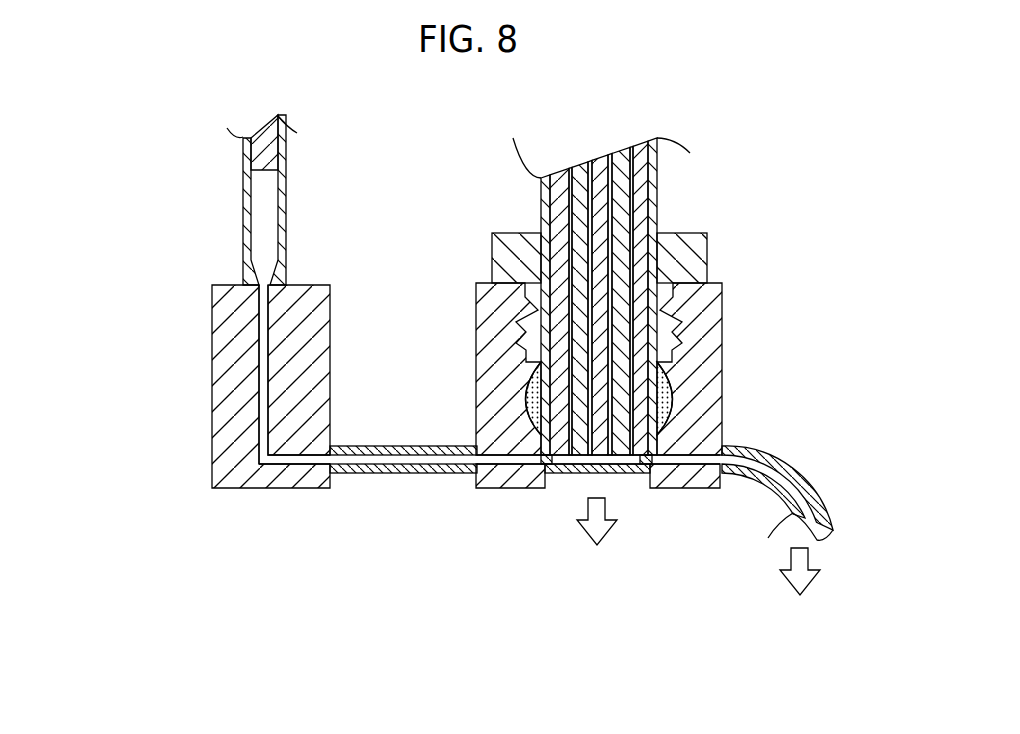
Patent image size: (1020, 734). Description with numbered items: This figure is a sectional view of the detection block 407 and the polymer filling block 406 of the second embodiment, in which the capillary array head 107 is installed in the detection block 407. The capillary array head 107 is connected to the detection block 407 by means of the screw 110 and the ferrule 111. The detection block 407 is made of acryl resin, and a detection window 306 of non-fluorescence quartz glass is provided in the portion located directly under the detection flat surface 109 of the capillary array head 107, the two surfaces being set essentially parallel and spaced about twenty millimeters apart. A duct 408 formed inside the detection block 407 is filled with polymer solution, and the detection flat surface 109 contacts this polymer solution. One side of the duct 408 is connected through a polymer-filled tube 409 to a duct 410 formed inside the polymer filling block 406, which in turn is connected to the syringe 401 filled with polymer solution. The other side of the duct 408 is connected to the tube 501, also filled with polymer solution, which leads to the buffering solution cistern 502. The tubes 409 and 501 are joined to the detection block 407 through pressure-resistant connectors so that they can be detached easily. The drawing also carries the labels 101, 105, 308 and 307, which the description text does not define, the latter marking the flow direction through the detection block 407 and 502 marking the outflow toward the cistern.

The biosensor chip (layered sensor body) 101 is at (640, 167).
The spacer 105 is at (583, 475).
The capillary array head 107 is at (541, 192).
The detection flat surface 109 is at (633, 475).
The screw 110 is at (710, 243).
The ferrule 111 is at (722, 352).
The detection window 306 is at (547, 477).
The flow direction 307 is at (597, 543).
The inlet block 308 is at (477, 475).
The syringe 401 is at (243, 205).
The polymer filling block 406 is at (238, 420).
The detection block 407 is at (478, 305).
The duct 408 is at (478, 447).
The tube 409 is at (370, 475).
The duct 410 is at (264, 338).
The tube 501 is at (760, 453).
The buffering solution cistern 502 is at (807, 590).